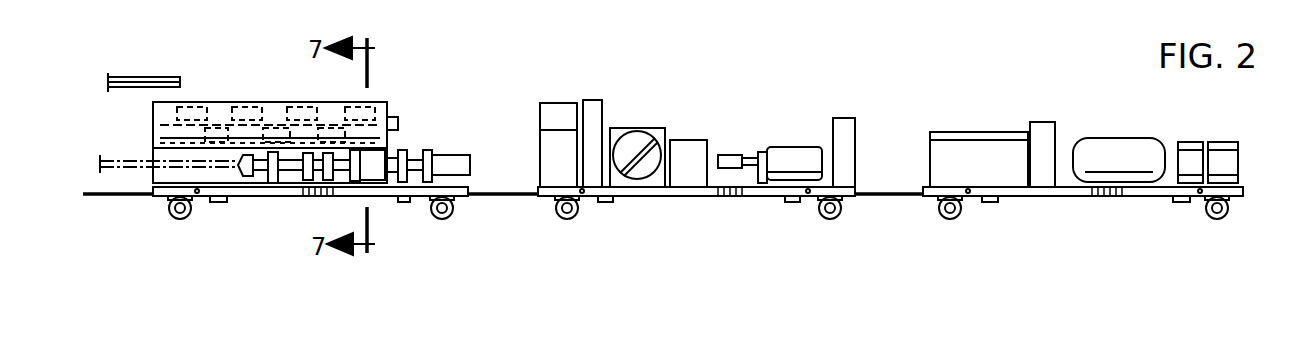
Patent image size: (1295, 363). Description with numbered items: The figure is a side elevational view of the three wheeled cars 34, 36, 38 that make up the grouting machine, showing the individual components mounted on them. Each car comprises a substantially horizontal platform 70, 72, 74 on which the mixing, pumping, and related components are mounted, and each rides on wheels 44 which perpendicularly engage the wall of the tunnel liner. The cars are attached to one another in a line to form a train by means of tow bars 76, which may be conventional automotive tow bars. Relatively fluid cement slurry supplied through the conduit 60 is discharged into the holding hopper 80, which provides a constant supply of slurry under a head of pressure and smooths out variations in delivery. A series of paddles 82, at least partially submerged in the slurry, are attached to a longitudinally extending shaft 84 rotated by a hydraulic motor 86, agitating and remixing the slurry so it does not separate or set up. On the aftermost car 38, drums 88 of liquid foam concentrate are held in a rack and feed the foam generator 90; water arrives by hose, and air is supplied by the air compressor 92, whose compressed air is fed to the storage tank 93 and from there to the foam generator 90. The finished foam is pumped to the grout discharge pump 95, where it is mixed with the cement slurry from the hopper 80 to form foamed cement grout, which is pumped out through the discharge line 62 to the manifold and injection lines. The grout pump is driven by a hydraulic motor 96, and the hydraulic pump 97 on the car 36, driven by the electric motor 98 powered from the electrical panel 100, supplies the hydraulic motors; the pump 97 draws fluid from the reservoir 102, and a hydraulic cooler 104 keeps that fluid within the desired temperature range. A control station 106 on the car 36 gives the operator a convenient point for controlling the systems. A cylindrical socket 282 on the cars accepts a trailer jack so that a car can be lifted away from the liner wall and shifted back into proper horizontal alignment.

The car 34 is at (292, 197).
The car 36 is at (696, 221).
The car 38 is at (1083, 189).
The wheels 44 is at (172, 216).
The conduit 60 is at (141, 78).
The discharge line 62 is at (130, 162).
The platform 70 is at (392, 196).
The platform 72 is at (752, 197).
The platform 74 is at (1072, 197).
The tow bars 76 is at (110, 196).
The holding hopper 80 is at (275, 102).
The paddles 82 is at (257, 118).
The shaft 84 is at (230, 126).
The hydraulic motor 86 is at (398, 122).
The drums 88 is at (1205, 142).
The foam generator 90 is at (550, 103).
The air compressor 92 is at (988, 132).
The storage tank 93 is at (1115, 138).
The grout discharge pump 95 is at (262, 168).
The hydraulic motor 96 is at (460, 158).
The hydraulic pump 97 is at (730, 155).
The electric motor 98 is at (790, 147).
The electrical panel 100 is at (855, 125).
The reservoir 102 is at (688, 140).
The hydraulic cooler 104 is at (625, 128).
The control station 106 is at (592, 100).
The cylindrical socket 282 is at (590, 203).